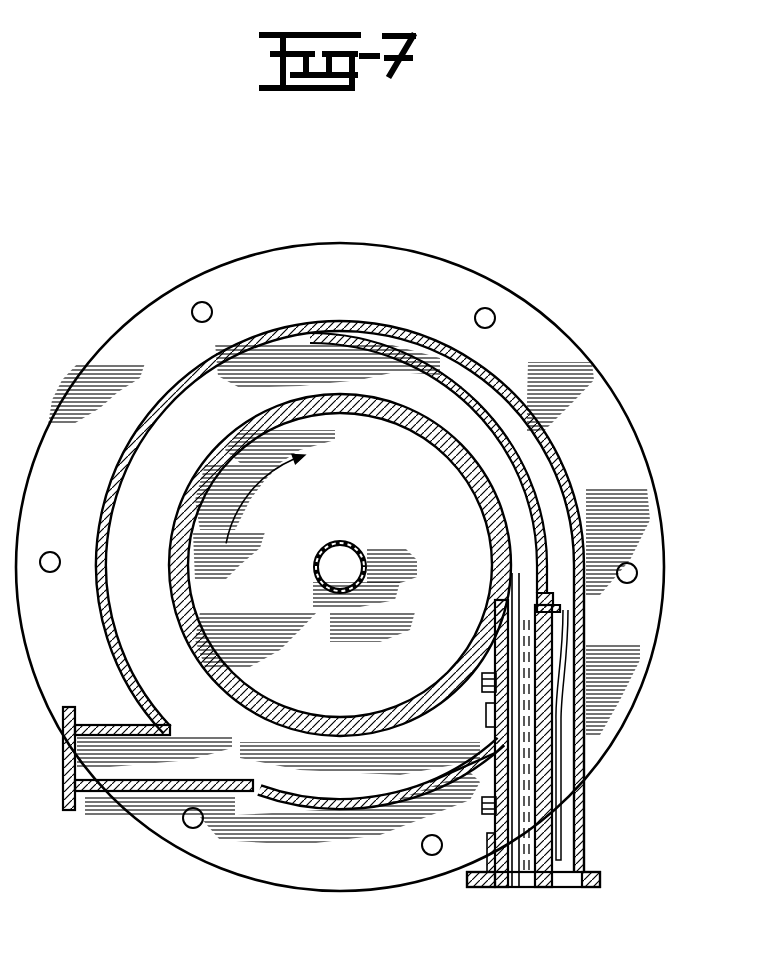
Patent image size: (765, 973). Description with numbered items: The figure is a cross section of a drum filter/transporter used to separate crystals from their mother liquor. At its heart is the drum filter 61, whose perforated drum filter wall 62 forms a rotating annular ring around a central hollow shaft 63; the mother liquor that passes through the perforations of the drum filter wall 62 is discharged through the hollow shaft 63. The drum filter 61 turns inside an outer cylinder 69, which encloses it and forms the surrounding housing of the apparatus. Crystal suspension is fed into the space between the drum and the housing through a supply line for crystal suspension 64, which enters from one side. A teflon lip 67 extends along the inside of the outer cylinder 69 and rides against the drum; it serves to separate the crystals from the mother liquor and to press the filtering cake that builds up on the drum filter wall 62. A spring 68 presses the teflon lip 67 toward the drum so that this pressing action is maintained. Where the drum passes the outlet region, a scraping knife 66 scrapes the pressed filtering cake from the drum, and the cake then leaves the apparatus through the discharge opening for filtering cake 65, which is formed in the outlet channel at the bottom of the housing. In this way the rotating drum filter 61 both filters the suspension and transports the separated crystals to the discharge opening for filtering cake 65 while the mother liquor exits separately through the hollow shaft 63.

The drum filter 61 is at (302, 488).
The perforated drum filter wall 62 is at (246, 430).
The hollow shaft 63 is at (338, 545).
The supply line for crystal suspension 64 is at (95, 768).
The discharge opening for filtering cake 65 is at (524, 886).
The scraping knife 66 is at (512, 886).
The teflon lip 67 is at (513, 460).
The spring 68 is at (568, 742).
The outer cylinder 69 is at (170, 397).